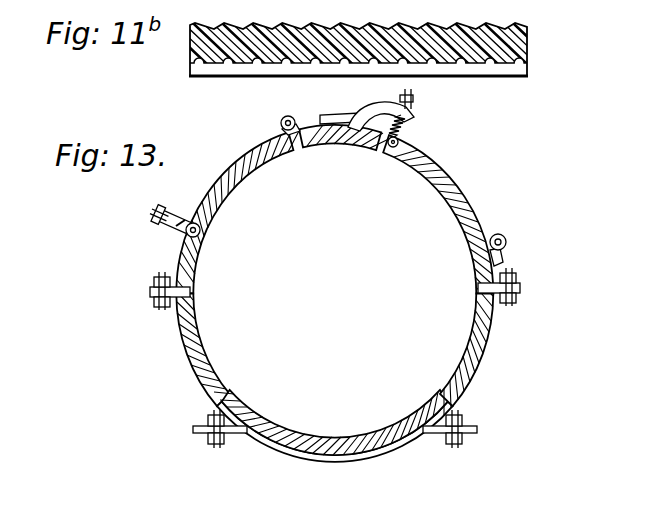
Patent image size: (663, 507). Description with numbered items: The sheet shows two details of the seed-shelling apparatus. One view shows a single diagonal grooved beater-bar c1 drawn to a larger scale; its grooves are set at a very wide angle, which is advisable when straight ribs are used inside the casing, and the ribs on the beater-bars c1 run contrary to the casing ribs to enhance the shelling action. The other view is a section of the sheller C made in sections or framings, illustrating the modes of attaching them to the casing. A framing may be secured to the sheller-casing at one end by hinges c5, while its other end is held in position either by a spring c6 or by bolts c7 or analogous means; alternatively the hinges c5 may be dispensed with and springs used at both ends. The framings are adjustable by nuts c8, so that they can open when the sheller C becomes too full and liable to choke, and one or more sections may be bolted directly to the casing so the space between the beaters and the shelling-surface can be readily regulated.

In FIG. 11B, the beater-bar c1 is at (246, 56).
In FIG. 13, the sheller C is at (476, 329).
In FIG. 13, the hinges c5 is at (504, 238).
In FIG. 13, the spring c6 is at (404, 131).
In FIG. 13, the bolts c7 is at (162, 231).
In FIG. 13, the nuts c8 is at (183, 222).